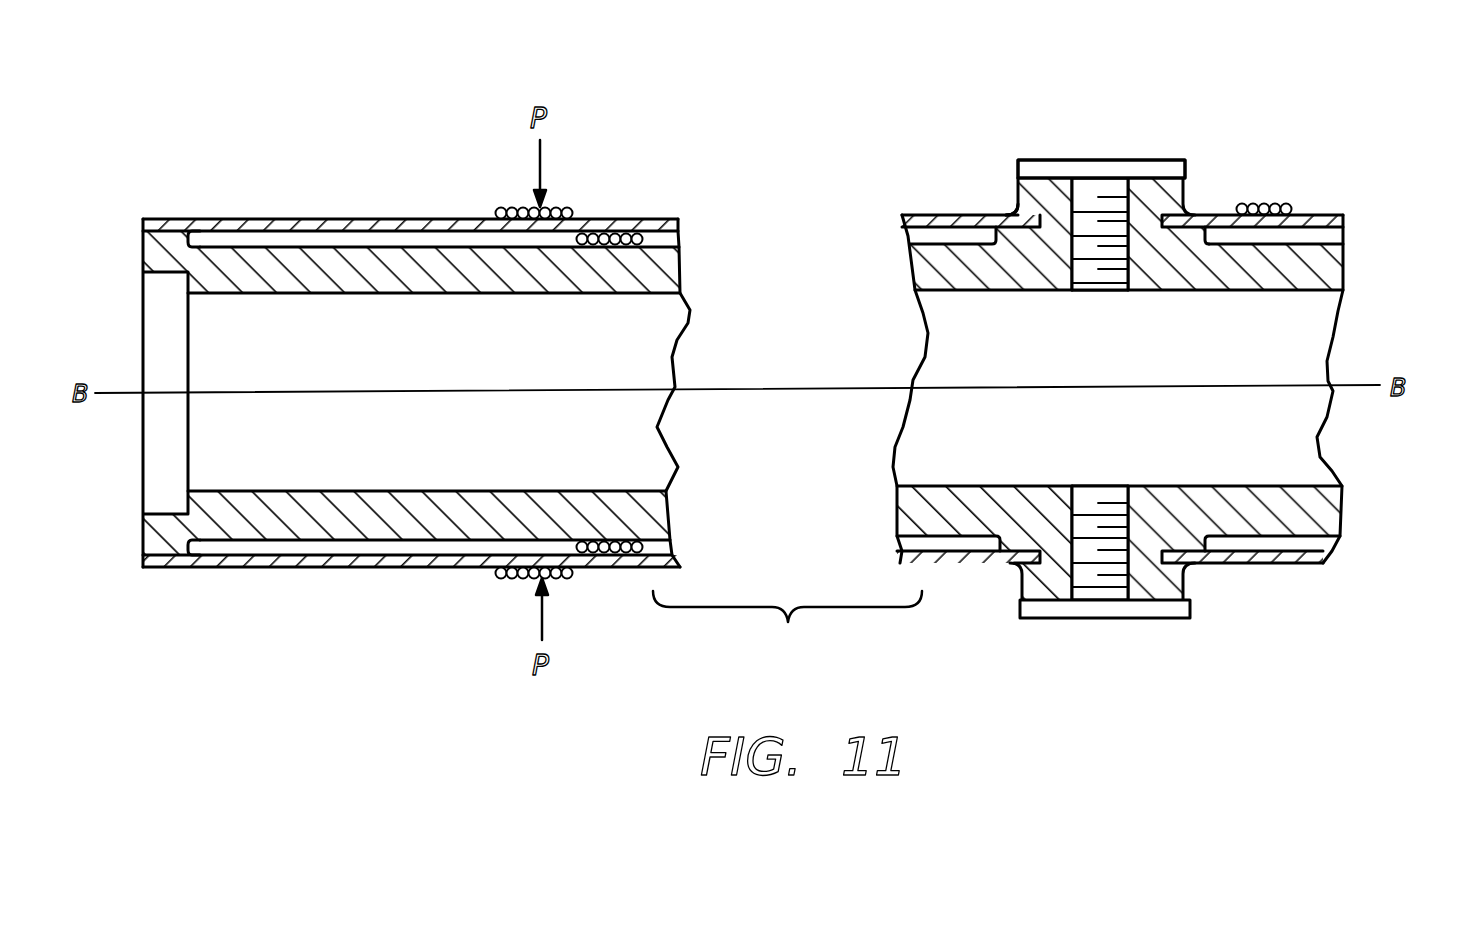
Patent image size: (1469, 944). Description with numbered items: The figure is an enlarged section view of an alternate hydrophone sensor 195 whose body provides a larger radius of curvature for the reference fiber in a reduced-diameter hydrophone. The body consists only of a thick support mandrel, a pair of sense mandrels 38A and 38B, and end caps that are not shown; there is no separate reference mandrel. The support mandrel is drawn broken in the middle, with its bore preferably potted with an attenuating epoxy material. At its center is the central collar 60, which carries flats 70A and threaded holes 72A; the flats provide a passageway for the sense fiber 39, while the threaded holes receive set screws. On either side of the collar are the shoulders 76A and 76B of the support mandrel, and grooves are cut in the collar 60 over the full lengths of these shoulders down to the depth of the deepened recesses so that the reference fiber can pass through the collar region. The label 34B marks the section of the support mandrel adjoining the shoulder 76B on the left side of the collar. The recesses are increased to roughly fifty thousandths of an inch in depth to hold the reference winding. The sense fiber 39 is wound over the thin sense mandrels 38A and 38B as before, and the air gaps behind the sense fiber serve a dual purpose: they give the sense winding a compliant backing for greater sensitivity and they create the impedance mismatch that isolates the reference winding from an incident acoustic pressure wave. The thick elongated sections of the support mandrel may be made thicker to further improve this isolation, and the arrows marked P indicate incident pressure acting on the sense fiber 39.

The sense mandrel 38B is at (387, 226).
The sense fiber 39 is at (568, 198).
The flat 70A is at (1036, 177).
The threaded hole 72A is at (1073, 193).
The central collar 60 is at (1168, 144).
The hydrophone sensor 195 is at (1285, 97).
The sense mandrel 38A is at (1330, 212).
The shoulder 76A is at (1190, 210).
The sleeve section 34B is at (1011, 200).
The shoulder 76B is at (1013, 208).